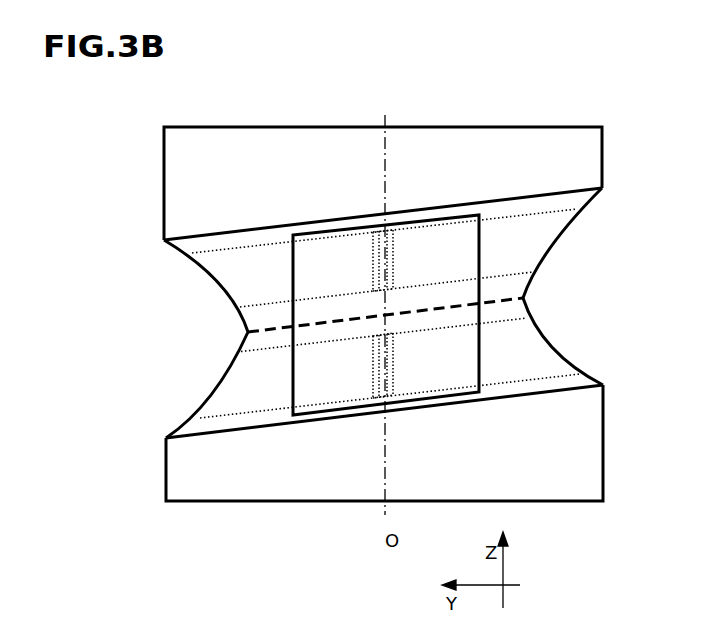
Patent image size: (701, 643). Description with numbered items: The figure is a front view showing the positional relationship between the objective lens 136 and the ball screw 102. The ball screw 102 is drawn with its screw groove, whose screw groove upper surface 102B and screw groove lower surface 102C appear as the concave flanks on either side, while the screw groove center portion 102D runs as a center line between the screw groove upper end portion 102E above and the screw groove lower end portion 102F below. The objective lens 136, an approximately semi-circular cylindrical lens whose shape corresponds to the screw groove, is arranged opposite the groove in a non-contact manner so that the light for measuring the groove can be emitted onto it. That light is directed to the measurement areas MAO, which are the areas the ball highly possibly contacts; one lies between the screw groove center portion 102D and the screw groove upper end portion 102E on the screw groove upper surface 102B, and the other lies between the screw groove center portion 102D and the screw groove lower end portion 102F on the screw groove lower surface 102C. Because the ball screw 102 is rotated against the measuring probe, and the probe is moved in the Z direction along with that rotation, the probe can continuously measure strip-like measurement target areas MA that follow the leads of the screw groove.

The ball screw 102 is at (534, 115).
The screw groove upper surface 102B is at (572, 200).
The screw groove lower surface 102C is at (580, 381).
The screw groove center portion 102D is at (524, 298).
The screw groove upper end portion 102E is at (465, 202).
The screw groove lower end portion 102F is at (457, 405).
The objective lens 136 is at (320, 243).
The measurement target areas MA is at (218, 268).
The measurement areas MAO is at (391, 230).